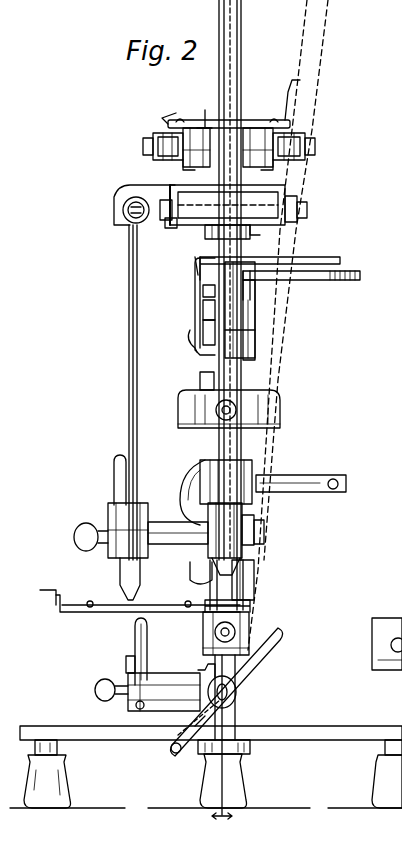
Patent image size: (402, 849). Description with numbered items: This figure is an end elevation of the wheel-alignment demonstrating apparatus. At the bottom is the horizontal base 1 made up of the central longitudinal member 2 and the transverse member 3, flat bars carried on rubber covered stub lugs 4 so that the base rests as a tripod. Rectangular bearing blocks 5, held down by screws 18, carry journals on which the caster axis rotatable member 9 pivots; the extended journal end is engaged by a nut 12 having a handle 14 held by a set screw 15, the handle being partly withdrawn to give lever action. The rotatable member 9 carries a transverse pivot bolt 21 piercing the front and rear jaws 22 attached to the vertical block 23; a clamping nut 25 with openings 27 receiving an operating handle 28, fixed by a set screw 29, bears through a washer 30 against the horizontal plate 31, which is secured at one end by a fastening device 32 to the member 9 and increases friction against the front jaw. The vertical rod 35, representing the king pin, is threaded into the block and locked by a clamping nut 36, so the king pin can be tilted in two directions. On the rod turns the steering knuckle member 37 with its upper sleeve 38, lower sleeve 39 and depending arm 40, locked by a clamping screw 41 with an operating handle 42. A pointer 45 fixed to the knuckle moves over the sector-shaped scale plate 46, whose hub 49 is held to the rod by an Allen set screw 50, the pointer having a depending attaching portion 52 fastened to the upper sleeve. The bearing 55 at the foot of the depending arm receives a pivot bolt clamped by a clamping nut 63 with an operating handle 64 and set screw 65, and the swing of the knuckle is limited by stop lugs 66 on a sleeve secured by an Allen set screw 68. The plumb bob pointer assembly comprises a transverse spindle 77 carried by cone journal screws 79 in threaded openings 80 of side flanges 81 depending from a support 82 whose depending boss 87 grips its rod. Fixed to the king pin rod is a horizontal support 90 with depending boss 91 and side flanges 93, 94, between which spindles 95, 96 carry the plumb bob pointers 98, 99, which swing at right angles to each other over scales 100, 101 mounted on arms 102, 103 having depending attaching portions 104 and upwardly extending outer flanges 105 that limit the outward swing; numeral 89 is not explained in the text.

The horizontal base 1 is at (355, 743).
The central longitudinal member 2 is at (188, 745).
The transverse member 3 is at (318, 733).
The rubber covered stub lug 4 is at (58, 752).
The bearing block 5 is at (256, 718).
The caster axis rotatable member 9 is at (172, 750).
The nut 12 is at (248, 706).
The handle 14 is at (275, 636).
The set screw 15 is at (248, 695).
The screw 18 is at (240, 755).
The transverse pivot bolt 21 is at (250, 700).
The jaw 22 is at (245, 690).
The vertical block 23 is at (270, 655).
The clamping nut 25 is at (126, 666).
The opening 27 is at (164, 692).
The operating handle 28 is at (135, 634).
The set screw 29 is at (97, 690).
The washer 30 is at (200, 715).
The horizontal plate 31 is at (200, 668).
The fastening device 32 is at (208, 688).
The vertical rod 35 is at (242, 36).
The clamping nut 36 is at (262, 520).
The steering knuckle member 37 is at (203, 380).
The upper sleeve 38 is at (257, 352).
The lower sleeve 39 is at (252, 466).
The depending arm 40 is at (182, 490).
The clamping screw 41 is at (315, 476).
The operating handle 42 is at (338, 480).
The pointer 45 is at (326, 257).
The sector-shaped scale plate 46 is at (360, 275).
The hub 49 is at (205, 310).
The Allen set screw 50 is at (203, 290).
The depending attaching portion 52 is at (196, 268).
The bearing 55 is at (190, 565).
The clamping nut 63 is at (108, 515).
The operating handle 64 is at (116, 460).
The set screw 65 is at (80, 525).
The stop lug 66 is at (282, 400).
The Allen set screw 68 is at (236, 405).
The transverse spindle 77 is at (262, 120).
The cone journal screw 79 is at (152, 145).
The threaded opening 80 is at (160, 158).
The side flange 81 is at (308, 185).
The support 82 is at (176, 118).
The depending boss 87 is at (205, 118).
The wire 89 is at (300, 90).
The horizontal support 90 is at (258, 196).
The depending boss 91 is at (223, 238).
The side flange 93 is at (166, 225).
The side flange 94 is at (291, 223).
The spindle 95 is at (124, 220).
The spindle 96 is at (258, 230).
The plumb bob pointer 98 is at (129, 405).
The plumb bob pointer 99 is at (243, 338).
The scale 100 is at (139, 595).
The scale 101 is at (254, 592).
The arm 102 is at (62, 612).
The arm 103 is at (250, 604).
The depending attaching portion 104 is at (203, 630).
The upwardly extending outer flange 105 is at (36, 594).